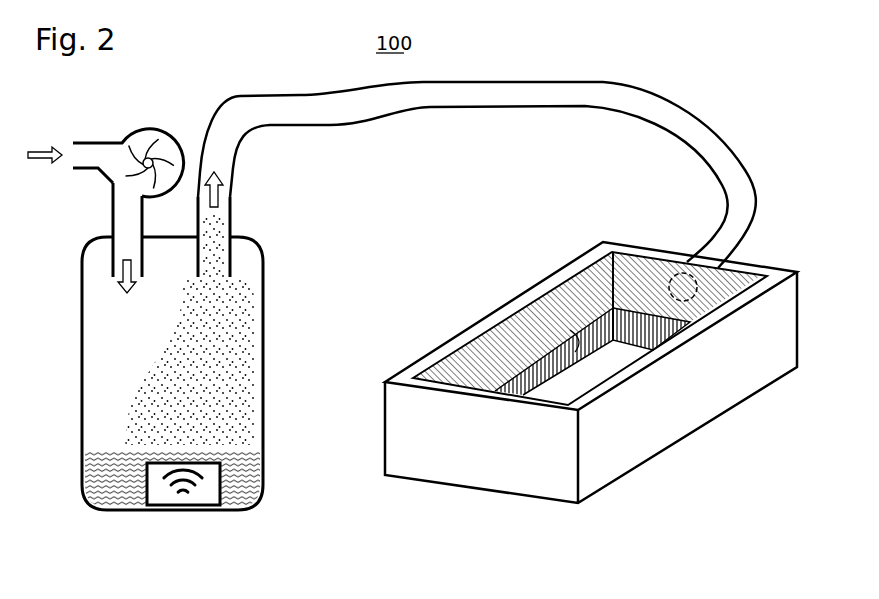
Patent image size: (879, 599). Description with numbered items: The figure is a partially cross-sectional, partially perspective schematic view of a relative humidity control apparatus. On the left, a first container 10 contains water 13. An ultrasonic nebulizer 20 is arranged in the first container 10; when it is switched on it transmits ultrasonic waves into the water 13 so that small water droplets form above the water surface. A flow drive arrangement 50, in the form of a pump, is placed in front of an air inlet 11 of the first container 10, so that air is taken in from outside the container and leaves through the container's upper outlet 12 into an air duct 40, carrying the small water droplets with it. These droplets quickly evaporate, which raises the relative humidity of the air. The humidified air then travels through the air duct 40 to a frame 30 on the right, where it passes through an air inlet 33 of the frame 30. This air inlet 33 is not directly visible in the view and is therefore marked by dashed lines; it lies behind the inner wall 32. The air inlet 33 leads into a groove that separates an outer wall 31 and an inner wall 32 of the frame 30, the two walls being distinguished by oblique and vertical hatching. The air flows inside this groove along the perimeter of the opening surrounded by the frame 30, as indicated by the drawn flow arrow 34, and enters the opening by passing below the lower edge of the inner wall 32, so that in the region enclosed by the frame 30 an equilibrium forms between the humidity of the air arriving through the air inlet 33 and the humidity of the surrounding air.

The first container 10 is at (82, 351).
The air inlet 11 is at (98, 222).
The outlet pipe 12 is at (248, 222).
The water 13 is at (95, 488).
The ultrasonic nebulizer 20 is at (196, 505).
The frame 30 is at (763, 272).
The outer wall 31 is at (537, 296).
The inner wall 32 is at (525, 318).
The air inlet 33 is at (670, 246).
The mist flow 34 is at (628, 318).
The air duct 40 is at (727, 143).
The flow drive arrangement 50 is at (154, 129).